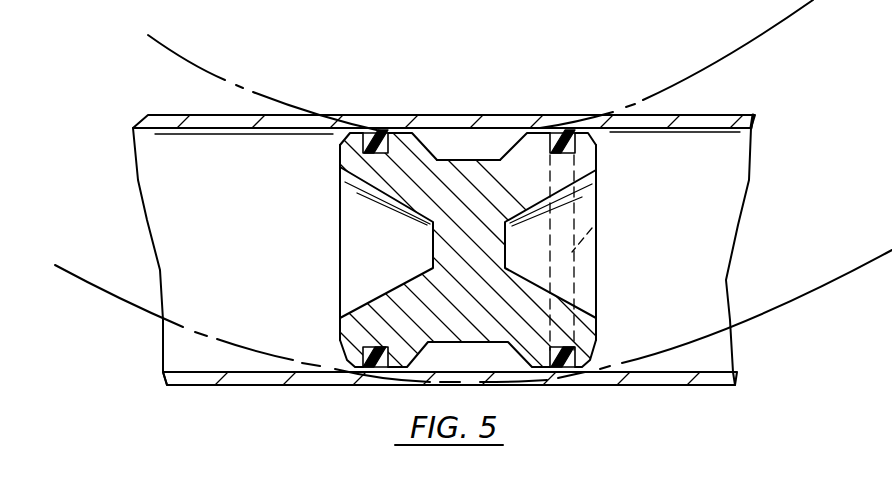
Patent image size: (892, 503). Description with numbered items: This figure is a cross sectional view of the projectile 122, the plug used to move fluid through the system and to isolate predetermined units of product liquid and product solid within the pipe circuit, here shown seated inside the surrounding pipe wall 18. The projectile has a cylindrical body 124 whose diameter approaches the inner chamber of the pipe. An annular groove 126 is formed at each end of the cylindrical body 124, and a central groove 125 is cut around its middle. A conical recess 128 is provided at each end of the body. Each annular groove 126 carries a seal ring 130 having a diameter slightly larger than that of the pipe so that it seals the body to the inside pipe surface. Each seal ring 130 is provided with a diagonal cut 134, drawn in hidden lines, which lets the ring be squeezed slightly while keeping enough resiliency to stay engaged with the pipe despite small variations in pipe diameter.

The housing 18 is at (765, 92).
The projectile 122 is at (332, 172).
The cylindrical body 124 is at (410, 131).
The central groove 125 is at (478, 159).
The annular groove 126 is at (362, 138).
The conical recess 128 is at (368, 322).
The seal ring 130 is at (386, 122).
The diagonal cut 134 is at (592, 228).